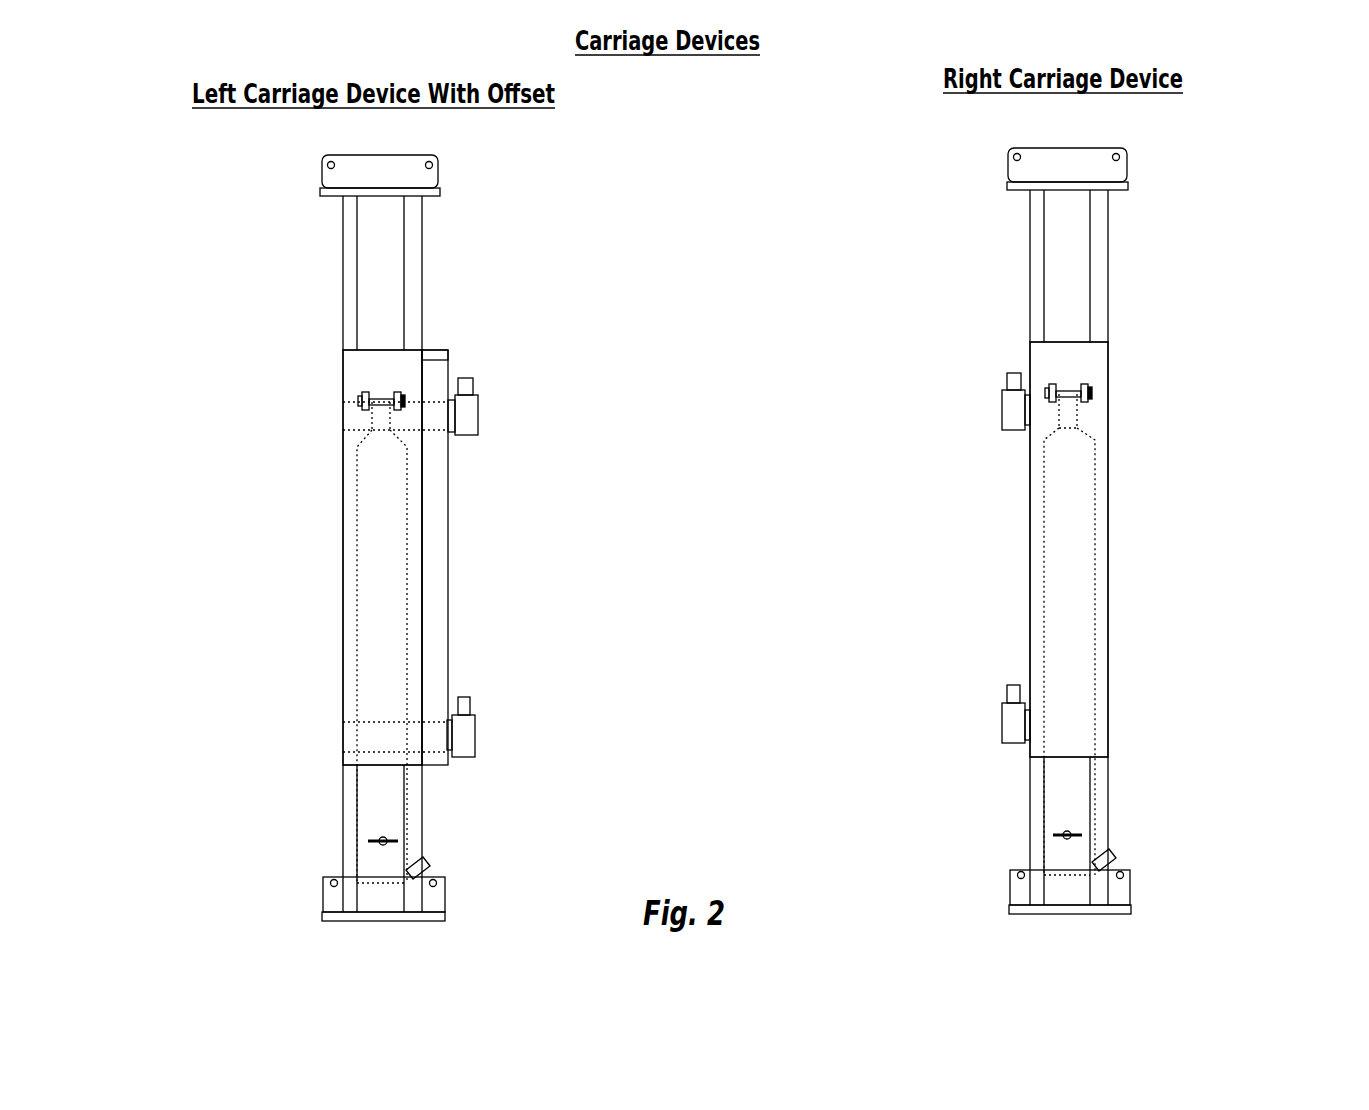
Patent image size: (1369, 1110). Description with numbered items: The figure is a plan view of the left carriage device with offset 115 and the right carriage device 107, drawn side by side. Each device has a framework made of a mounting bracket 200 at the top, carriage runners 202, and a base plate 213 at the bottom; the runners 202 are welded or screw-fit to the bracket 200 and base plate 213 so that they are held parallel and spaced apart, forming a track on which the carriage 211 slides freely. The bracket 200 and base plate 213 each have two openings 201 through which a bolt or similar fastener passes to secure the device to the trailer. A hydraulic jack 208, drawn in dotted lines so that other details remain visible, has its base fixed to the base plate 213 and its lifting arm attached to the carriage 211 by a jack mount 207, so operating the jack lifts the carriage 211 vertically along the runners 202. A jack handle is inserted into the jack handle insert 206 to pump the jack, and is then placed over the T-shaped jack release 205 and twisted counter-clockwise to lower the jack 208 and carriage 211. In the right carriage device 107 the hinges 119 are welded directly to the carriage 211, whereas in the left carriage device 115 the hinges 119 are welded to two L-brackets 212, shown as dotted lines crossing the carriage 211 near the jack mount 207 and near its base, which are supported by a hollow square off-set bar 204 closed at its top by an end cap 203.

The right carriage device 107 is at (871, 235).
The left carriage device with offset 115 is at (204, 235).
The hinge 119 is at (479, 403).
The mounting bracket 200 is at (440, 186).
The opening 201 is at (331, 160).
The carriage runner 202 is at (423, 270).
The end cap 203 is at (449, 358).
The off-set bar 204 is at (449, 628).
The jack release 205 is at (383, 837).
The jack handle insert 206 is at (428, 865).
The jack mount 207 is at (272, 365).
The hydraulic jack 208 is at (235, 708).
The carriage 211 is at (255, 485).
The L-bracket 212 is at (350, 430).
The base plate 213 is at (738, 787).